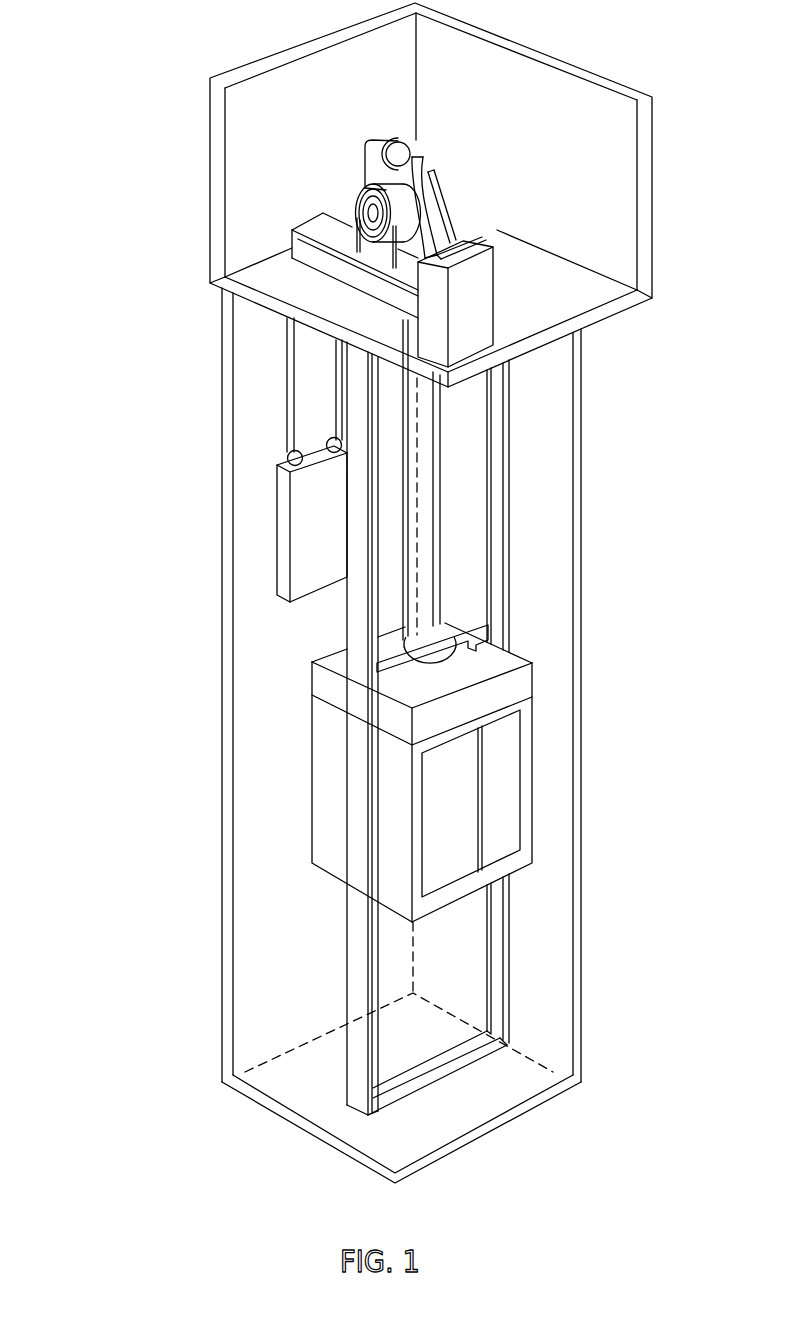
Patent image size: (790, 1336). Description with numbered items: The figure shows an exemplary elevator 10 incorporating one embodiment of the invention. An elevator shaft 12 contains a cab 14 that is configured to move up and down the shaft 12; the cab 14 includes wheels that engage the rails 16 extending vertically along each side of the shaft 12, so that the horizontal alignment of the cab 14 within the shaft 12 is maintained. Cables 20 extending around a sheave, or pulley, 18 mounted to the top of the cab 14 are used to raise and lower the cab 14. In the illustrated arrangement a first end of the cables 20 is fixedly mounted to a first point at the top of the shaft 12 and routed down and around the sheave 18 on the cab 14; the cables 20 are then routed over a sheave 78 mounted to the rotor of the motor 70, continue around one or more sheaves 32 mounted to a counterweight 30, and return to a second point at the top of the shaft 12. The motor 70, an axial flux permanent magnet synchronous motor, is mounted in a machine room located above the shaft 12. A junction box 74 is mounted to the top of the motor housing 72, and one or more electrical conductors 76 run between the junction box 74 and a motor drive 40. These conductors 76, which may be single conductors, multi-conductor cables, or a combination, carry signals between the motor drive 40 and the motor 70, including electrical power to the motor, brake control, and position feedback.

The elevator 10 is at (130, 232).
The elevator shaft 12 is at (552, 612).
The cab 14 is at (510, 863).
The rails 16 is at (355, 995).
The sheave 18 is at (434, 660).
The cables 20 is at (434, 530).
The counterweight 30 is at (312, 598).
The sheaves 32 is at (297, 450).
The motor drive 40 is at (477, 240).
The motor 70 is at (348, 128).
The housing 72 is at (441, 157).
The junction box 74 is at (386, 141).
The electrical conductors 76 is at (458, 238).
The sheave 78 is at (354, 194).